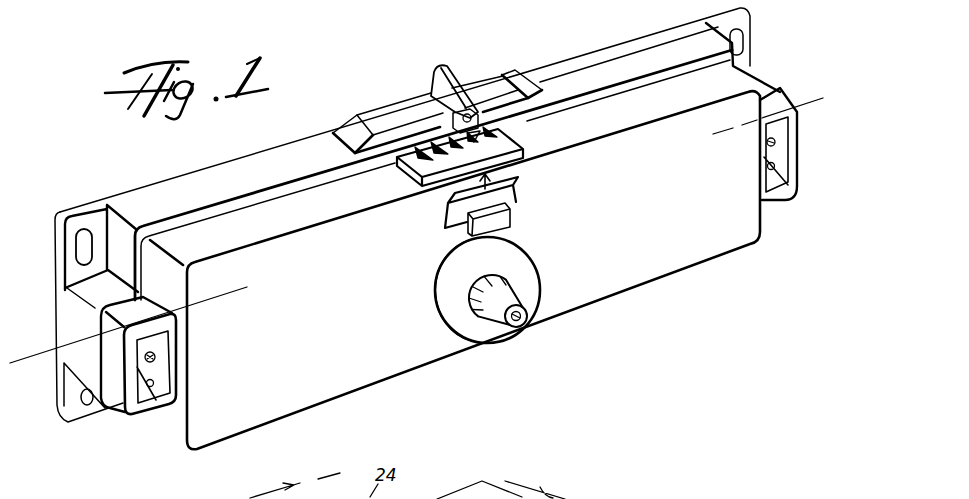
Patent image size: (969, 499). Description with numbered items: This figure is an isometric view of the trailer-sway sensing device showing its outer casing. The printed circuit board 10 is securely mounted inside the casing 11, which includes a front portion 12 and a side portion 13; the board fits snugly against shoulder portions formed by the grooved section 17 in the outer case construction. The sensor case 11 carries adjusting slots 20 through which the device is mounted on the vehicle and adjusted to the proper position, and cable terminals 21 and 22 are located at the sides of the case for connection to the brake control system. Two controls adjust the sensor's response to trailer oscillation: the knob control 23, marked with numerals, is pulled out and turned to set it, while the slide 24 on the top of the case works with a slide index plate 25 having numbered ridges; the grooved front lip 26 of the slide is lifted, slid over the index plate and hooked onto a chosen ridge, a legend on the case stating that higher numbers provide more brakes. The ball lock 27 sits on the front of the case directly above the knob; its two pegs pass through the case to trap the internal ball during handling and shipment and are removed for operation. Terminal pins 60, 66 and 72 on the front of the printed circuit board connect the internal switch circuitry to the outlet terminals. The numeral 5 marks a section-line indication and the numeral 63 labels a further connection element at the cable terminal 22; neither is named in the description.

The section line 5- 5 is at (25, 345).
The printed circuit board 10 is at (52, 417).
The casing 11 is at (647, 270).
The front portion 12 is at (376, 375).
The side portion 13 is at (760, 80).
The grooved section 17 is at (180, 222).
The adjusting slots 20 is at (83, 234).
The cable terminal 21 is at (157, 388).
The cable terminal 22 is at (795, 162).
The knob control 23 is at (512, 328).
The slide 24 is at (433, 72).
The slide index plate 25 is at (540, 118).
The grooved front lip 26 is at (470, 110).
The ball lock 27 is at (523, 200).
The terminal pin 60 is at (776, 164).
The screw 63 is at (775, 143).
The terminal pin 66 is at (157, 355).
The terminal pin 72 is at (151, 393).